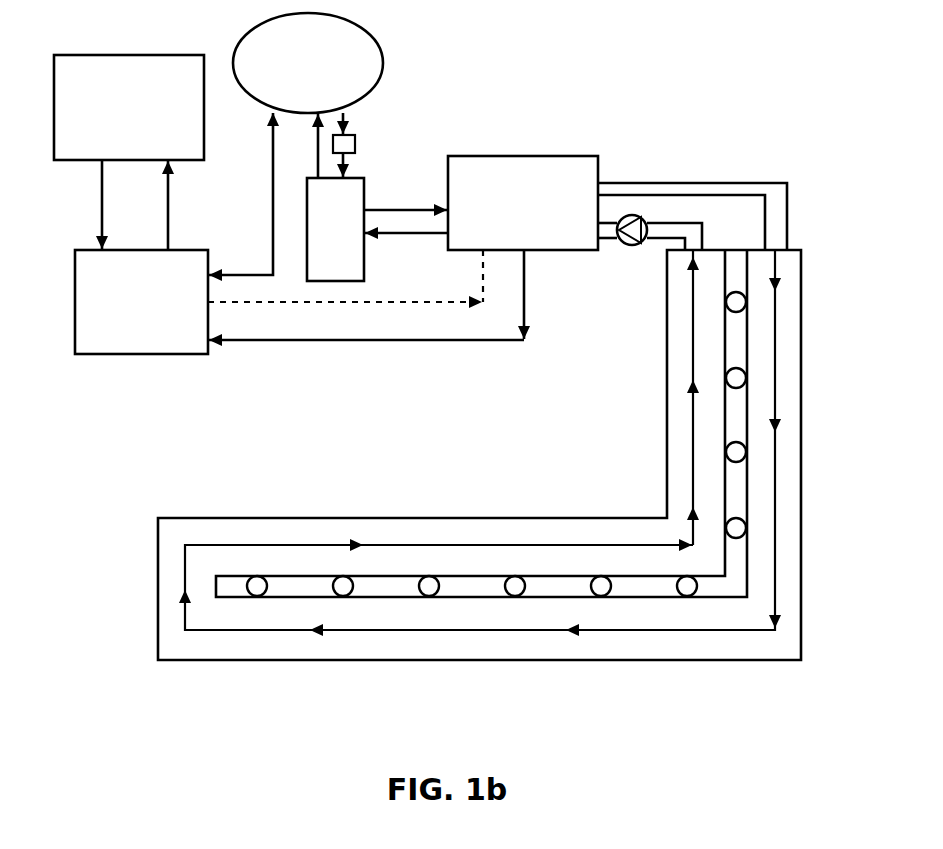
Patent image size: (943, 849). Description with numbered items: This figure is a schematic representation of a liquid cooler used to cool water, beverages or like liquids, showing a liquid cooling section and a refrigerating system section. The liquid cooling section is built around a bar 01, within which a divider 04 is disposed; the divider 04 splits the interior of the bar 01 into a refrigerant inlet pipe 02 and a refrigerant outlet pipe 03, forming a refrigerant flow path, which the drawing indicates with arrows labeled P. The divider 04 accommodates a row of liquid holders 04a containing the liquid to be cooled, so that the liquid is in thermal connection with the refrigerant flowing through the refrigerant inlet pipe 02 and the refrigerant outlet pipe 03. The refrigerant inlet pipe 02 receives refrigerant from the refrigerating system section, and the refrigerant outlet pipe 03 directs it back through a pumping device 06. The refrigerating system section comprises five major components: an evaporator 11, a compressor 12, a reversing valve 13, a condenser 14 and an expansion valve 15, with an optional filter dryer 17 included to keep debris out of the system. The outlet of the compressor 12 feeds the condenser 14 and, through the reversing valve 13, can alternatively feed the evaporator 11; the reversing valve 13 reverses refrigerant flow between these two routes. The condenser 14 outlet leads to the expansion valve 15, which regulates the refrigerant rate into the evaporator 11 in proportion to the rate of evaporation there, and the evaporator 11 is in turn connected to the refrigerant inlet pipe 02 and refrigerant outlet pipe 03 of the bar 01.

The bar 01 is at (210, 515).
The refrigerant inlet pipe 02 is at (789, 274).
The refrigerant outlet pipe 03 is at (690, 355).
The divider 04 is at (470, 601).
The liquid holder 04a is at (427, 572).
The pumping device 06 is at (618, 246).
The evaporator 11 is at (523, 203).
The compressor 12 is at (129, 107).
The reversing valve 13 is at (141, 302).
The condenser 14 is at (308, 63).
The expansion valve 15 is at (335, 229).
The filter dryer 17 is at (357, 142).
The fluid flow path P is at (180, 581).